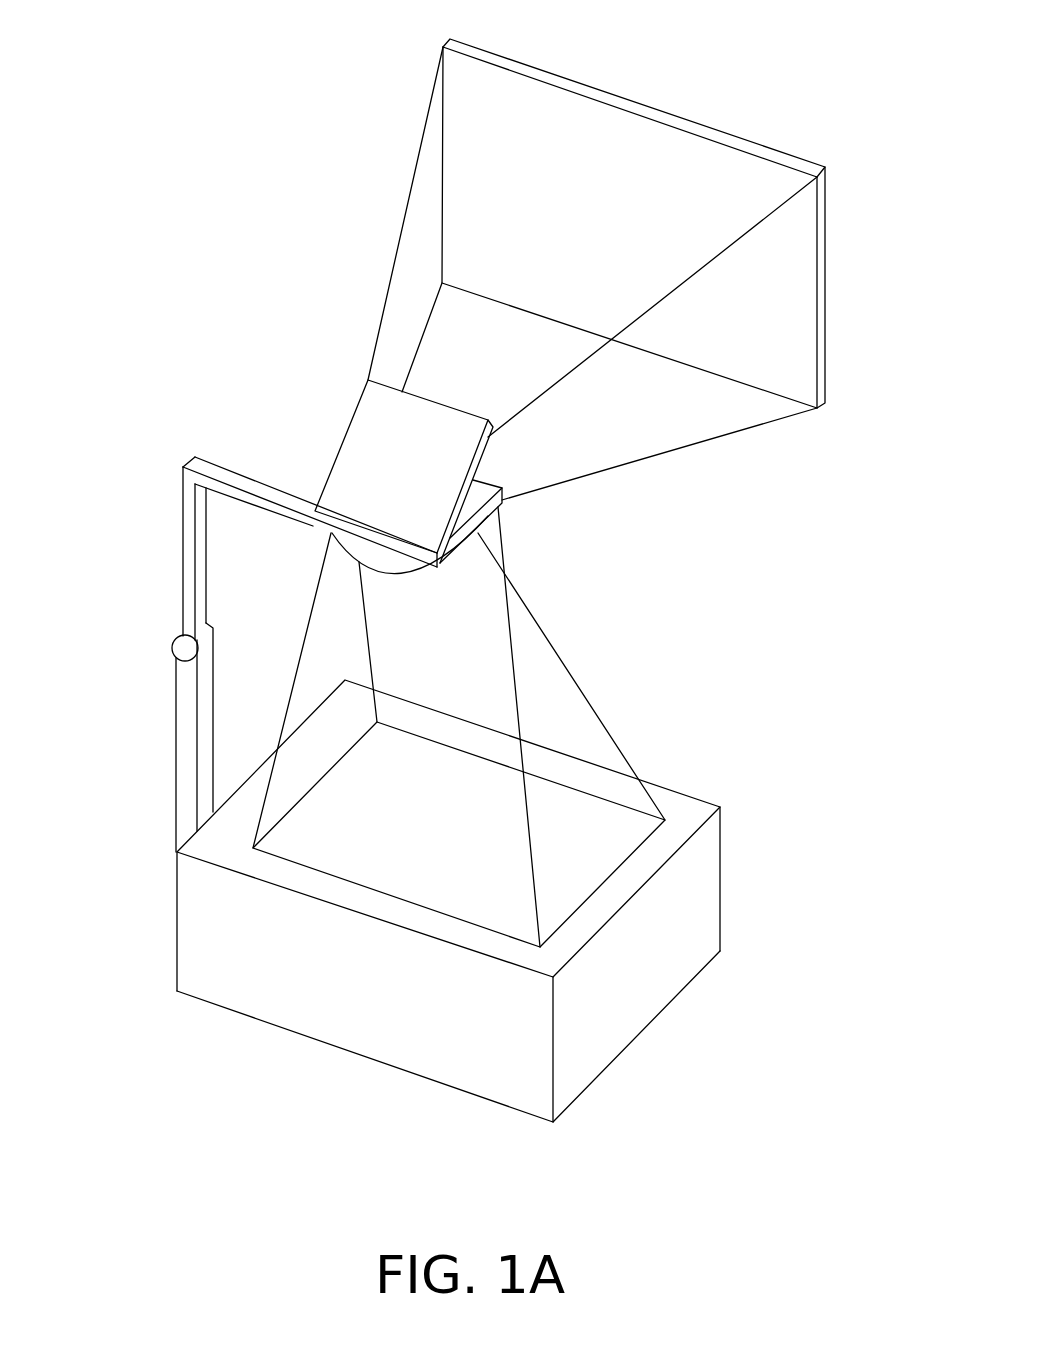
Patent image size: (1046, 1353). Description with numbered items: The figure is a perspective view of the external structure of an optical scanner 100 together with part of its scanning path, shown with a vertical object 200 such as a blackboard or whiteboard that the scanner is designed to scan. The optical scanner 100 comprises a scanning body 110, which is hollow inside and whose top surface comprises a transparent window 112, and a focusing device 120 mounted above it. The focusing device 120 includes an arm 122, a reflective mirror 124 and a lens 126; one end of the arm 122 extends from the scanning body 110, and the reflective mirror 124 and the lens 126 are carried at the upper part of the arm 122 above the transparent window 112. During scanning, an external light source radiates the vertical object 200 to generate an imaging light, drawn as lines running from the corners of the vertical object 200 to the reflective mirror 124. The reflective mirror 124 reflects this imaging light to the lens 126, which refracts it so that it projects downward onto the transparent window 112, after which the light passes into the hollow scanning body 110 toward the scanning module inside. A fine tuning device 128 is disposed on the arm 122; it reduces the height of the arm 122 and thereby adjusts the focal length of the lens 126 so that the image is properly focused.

The optical scanner 100 is at (703, 1087).
The scanning body 110 is at (700, 902).
The transparent window 112 is at (423, 880).
The focusing device 120 is at (213, 430).
The arm 122 is at (188, 565).
The reflective mirror 124 is at (370, 447).
The lens 126 is at (477, 533).
The fine tuning device 128 is at (180, 649).
The vertical object 200 is at (625, 102).